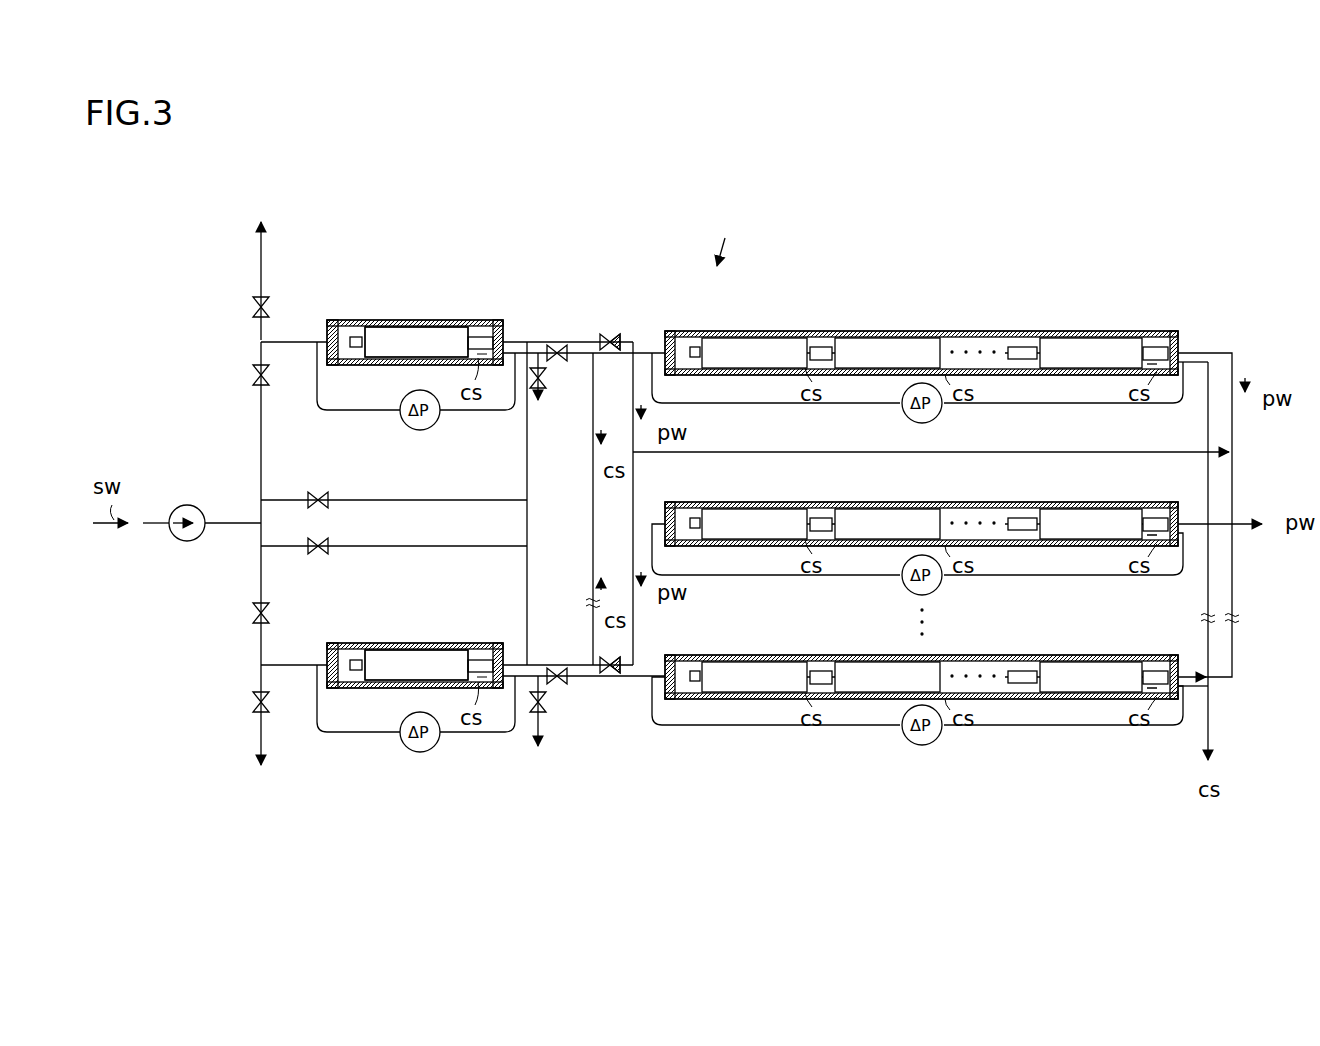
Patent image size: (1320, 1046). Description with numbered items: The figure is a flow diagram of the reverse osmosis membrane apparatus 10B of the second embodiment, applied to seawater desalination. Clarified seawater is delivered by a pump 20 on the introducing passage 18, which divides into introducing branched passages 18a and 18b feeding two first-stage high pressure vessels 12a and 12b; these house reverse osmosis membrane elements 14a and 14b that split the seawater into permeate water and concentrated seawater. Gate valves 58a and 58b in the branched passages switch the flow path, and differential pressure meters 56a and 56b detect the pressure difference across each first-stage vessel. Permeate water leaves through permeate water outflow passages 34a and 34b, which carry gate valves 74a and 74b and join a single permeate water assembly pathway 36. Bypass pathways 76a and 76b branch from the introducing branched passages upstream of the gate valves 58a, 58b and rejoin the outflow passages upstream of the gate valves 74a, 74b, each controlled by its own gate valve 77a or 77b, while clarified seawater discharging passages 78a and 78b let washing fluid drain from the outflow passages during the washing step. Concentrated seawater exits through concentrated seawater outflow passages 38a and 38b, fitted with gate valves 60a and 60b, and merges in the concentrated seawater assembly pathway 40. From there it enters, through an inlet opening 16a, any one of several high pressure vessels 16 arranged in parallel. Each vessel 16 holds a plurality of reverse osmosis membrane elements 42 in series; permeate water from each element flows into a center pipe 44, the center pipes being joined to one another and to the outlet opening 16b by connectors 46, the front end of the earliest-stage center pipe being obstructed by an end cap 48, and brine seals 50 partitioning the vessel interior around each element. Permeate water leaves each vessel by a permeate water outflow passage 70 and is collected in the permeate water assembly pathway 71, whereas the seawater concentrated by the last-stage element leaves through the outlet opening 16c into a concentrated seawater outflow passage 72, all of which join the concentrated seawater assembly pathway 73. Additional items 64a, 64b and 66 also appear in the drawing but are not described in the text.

The reverse osmosis membrane apparatus 10B is at (744, 242).
The high pressure vessel 12a is at (430, 318).
The high pressure vessel 12b is at (430, 641).
The reverse osmosis membrane element 14a is at (398, 326).
The reverse osmosis membrane element 14b is at (398, 648).
The high pressure vessel 16 is at (945, 321).
The inlet opening 16a is at (683, 346).
The outlet opening 16b is at (1182, 348).
The outlet opening 16c is at (1168, 376).
The introducing passage 18 is at (224, 520).
The introducing branched passage 18a is at (289, 340).
The introducing branched passage 18b is at (289, 662).
The pump 20 is at (174, 508).
The permeate water outflow passage 34a is at (580, 338).
The permeate water outflow passage 34b is at (548, 660).
The permeate water assembly pathway 36 is at (705, 450).
The concentrated seawater outflow passage 38a is at (588, 358).
The concentrated seawater outflow passage 38b is at (582, 680).
The concentrated seawater assembly pathway 40 is at (591, 530).
The reverse osmosis membrane element 42 is at (768, 336).
The center pipe 44 is at (1014, 346).
The connector 46 is at (1030, 345).
The end cap 48 is at (696, 346).
The brine seal 50 is at (936, 345).
The differential pressure meter 56a is at (436, 424).
The differential pressure meter 56b is at (436, 746).
The gate valve 58a is at (252, 376).
The gate valve 58b is at (252, 610).
The gate valve 60a is at (558, 364).
The gate valve 60b is at (560, 688).
The discharge line 64a is at (252, 260).
The discharge line 64b is at (252, 740).
The differential pressure sensor 66 is at (940, 416).
The permeate water outflow passage 70 is at (1220, 350).
The permeate water assembly pathway 71 is at (1252, 516).
The concentrated seawater outflow passage 72 is at (1206, 392).
The concentrated seawater assembly pathway 73 is at (1212, 706).
The gate valve 74a is at (614, 332).
The gate valve 74b is at (618, 658).
The bypass pathway 76a is at (345, 498).
The bypass pathway 76b is at (350, 548).
The gate valve 77a is at (314, 490).
The gate valve 77b is at (316, 556).
The clarified seawater discharging passage 78a is at (540, 410).
The clarified seawater discharging passage 78b is at (546, 740).